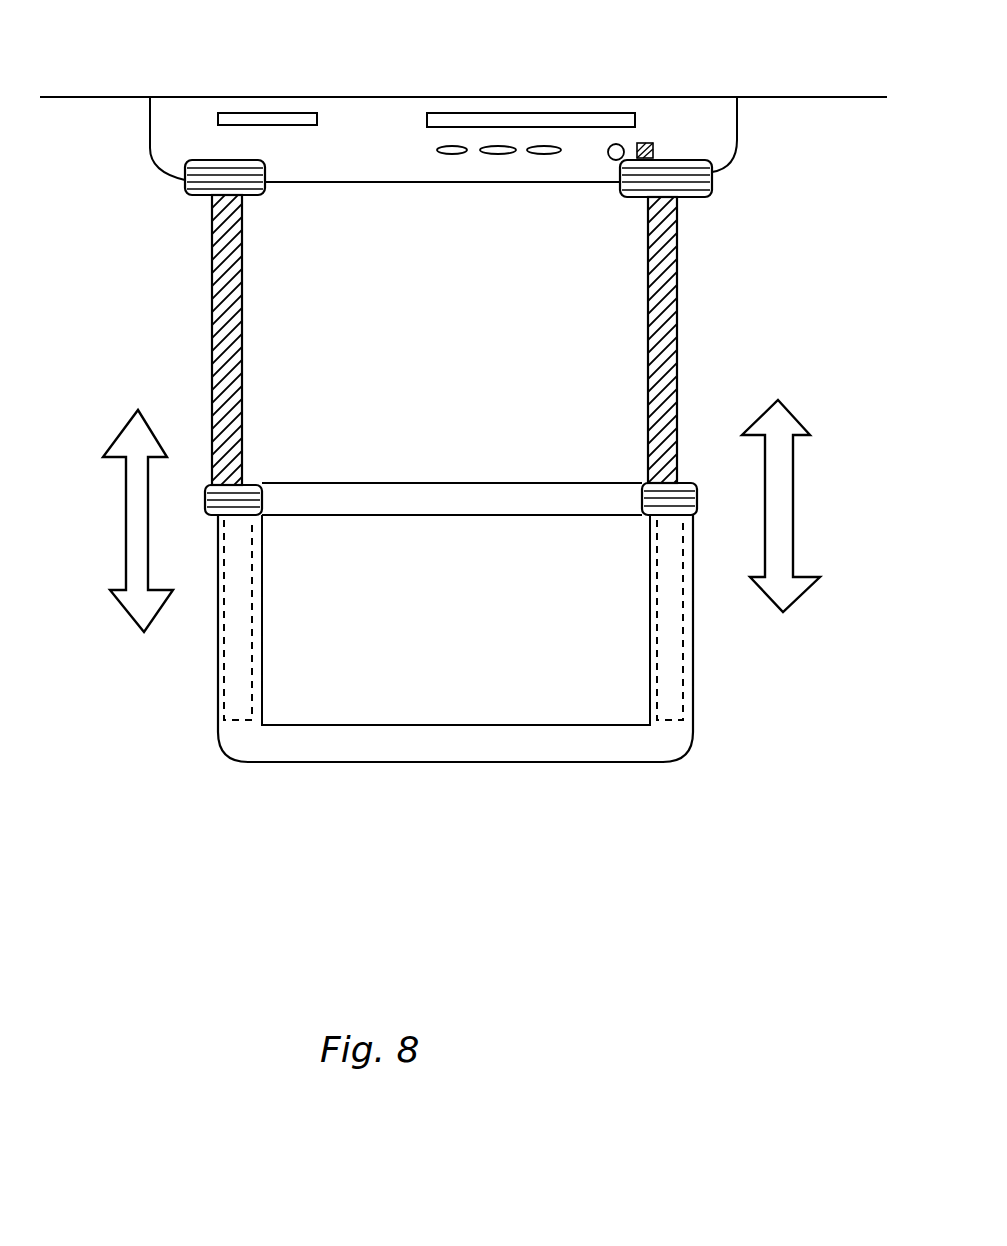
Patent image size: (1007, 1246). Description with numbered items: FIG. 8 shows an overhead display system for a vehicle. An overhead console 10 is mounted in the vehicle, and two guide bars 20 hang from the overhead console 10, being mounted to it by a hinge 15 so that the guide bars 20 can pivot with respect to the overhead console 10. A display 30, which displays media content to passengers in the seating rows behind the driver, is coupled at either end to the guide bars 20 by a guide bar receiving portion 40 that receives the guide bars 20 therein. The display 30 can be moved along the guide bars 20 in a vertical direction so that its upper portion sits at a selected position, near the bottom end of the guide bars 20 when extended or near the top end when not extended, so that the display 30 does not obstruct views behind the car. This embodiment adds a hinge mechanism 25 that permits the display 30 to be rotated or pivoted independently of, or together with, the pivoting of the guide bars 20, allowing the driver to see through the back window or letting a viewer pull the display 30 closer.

The overhead console 10 is at (708, 125).
The hinge 15 is at (185, 181).
The guide bars 20 is at (248, 303).
The hinge mechanism 25 is at (205, 498).
The display 30 is at (580, 692).
The guide bar receiving portion 40 is at (672, 648).